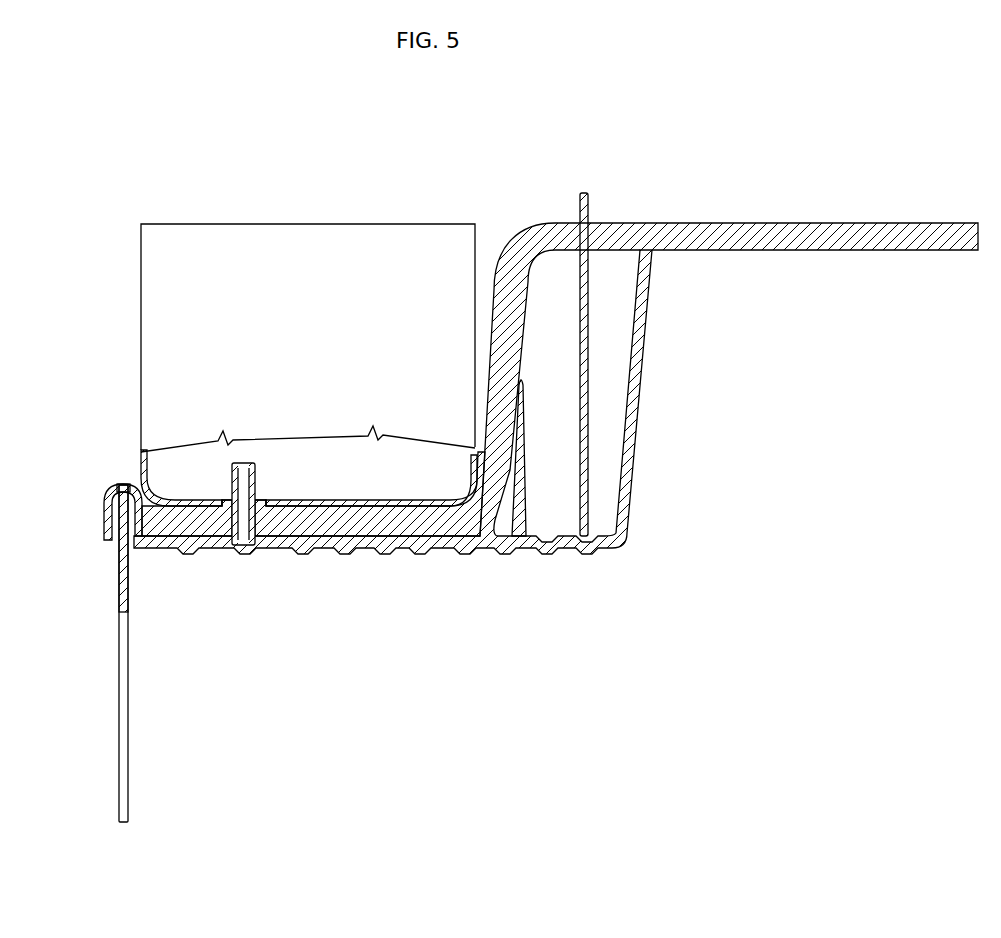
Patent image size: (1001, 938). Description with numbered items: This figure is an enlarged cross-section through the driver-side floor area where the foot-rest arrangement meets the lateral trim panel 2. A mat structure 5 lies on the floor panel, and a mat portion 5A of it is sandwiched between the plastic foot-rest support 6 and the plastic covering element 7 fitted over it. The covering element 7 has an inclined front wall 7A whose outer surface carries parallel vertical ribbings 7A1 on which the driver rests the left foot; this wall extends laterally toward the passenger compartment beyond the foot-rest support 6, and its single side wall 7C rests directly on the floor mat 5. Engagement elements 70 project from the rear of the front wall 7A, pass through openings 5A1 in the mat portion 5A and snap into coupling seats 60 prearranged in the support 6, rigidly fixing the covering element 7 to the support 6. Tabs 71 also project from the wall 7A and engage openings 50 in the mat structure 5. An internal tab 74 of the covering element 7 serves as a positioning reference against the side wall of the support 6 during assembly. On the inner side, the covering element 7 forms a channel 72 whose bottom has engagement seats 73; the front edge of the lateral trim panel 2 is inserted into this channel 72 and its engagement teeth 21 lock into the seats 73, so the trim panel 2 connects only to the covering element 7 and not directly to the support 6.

The lateral trim panel 2 is at (111, 653).
The mat structure 5 is at (815, 216).
The mat portion 5A is at (185, 540).
The openings 5A1 is at (245, 547).
The foot-rest support 6 is at (137, 311).
The covering element 7 is at (636, 488).
The inclined front wall 7A is at (365, 551).
The parallel vertical ribbings 7A1 is at (481, 552).
The side wall 7C is at (645, 374).
The engagement teeth 21 is at (121, 483).
The openings 50 is at (580, 210).
The coupling seats 60 is at (270, 498).
The engagement elements 70 is at (253, 468).
The tabs 71 is at (590, 362).
The channel 72 is at (103, 521).
The engagement seats 73 is at (119, 485).
The internal tab 74 is at (527, 443).